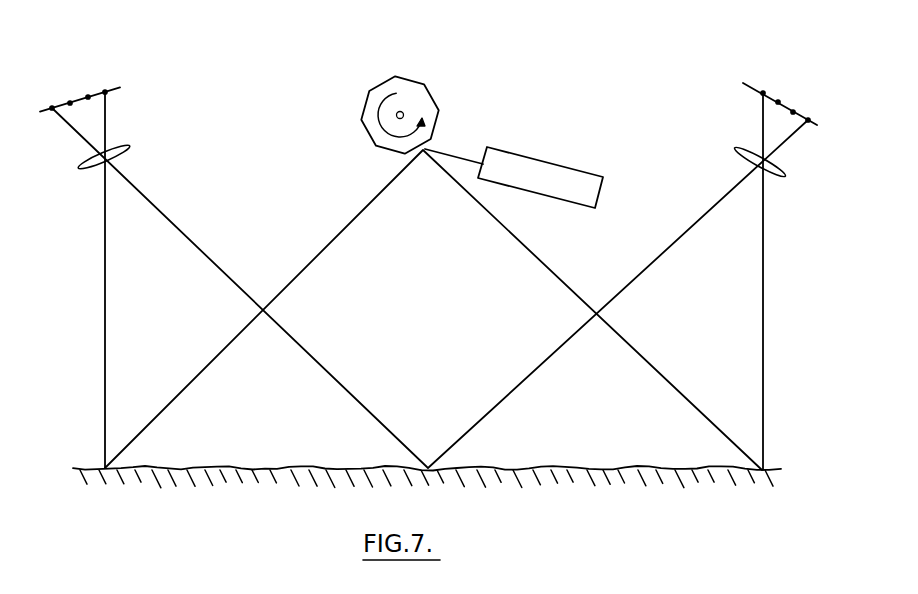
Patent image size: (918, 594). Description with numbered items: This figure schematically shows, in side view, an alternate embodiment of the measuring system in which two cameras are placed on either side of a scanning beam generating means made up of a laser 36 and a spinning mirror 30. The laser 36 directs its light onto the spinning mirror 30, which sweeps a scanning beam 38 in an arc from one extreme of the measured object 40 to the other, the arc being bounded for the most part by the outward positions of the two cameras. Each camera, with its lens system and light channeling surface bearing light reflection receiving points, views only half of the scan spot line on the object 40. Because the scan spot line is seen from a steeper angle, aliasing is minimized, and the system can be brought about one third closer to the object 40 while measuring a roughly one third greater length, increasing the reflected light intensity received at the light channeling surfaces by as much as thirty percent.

The spinning mirror 30 is at (440, 77).
The laser 36 is at (537, 158).
The scanning beam 38 is at (315, 259).
The measured object 40 is at (82, 468).